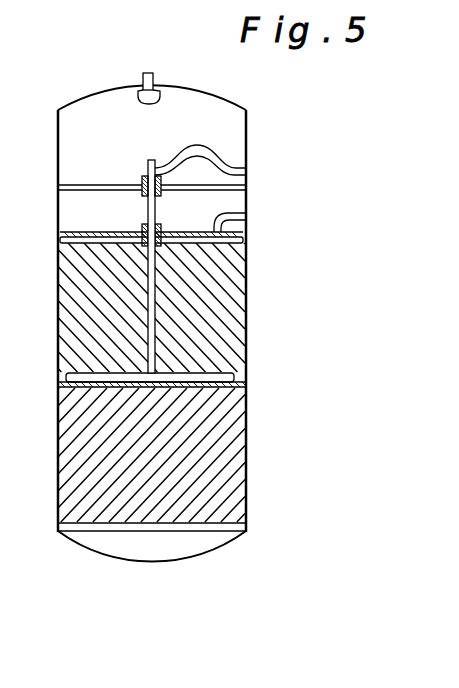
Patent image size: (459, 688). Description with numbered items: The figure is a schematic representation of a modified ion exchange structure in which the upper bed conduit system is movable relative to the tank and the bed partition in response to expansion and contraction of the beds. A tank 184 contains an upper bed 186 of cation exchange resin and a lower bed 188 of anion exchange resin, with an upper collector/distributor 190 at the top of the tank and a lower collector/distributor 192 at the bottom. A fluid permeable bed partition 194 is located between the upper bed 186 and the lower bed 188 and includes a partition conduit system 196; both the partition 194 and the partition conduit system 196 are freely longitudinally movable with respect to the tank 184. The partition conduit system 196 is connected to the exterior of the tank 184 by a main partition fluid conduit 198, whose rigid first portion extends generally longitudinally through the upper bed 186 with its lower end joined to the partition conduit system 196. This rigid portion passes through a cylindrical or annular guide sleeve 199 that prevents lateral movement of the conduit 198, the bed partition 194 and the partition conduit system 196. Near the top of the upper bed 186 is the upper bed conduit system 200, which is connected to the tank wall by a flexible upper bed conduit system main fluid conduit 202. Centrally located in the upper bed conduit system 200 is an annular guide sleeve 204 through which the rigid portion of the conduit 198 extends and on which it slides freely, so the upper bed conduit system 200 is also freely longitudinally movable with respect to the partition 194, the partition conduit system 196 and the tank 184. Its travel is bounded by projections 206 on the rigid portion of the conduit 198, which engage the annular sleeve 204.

The tank 184 is at (58, 293).
The upper bed 186 is at (247, 342).
The lower bed 188 is at (77, 482).
The upper collector/distributor 190 is at (143, 78).
The lower collector/distributor 192 is at (176, 532).
The fluid permeable bed partition 194 is at (240, 387).
The partition conduit system 196 is at (66, 374).
The main partition fluid conduit 198 is at (148, 168).
The guide sleeve 199 is at (187, 177).
The upper bed conduit system 200 is at (196, 250).
The upper bed conduit system main fluid conduit 202 is at (247, 210).
The annular guide sleeve 204 is at (147, 225).
The projections 206 is at (147, 208).